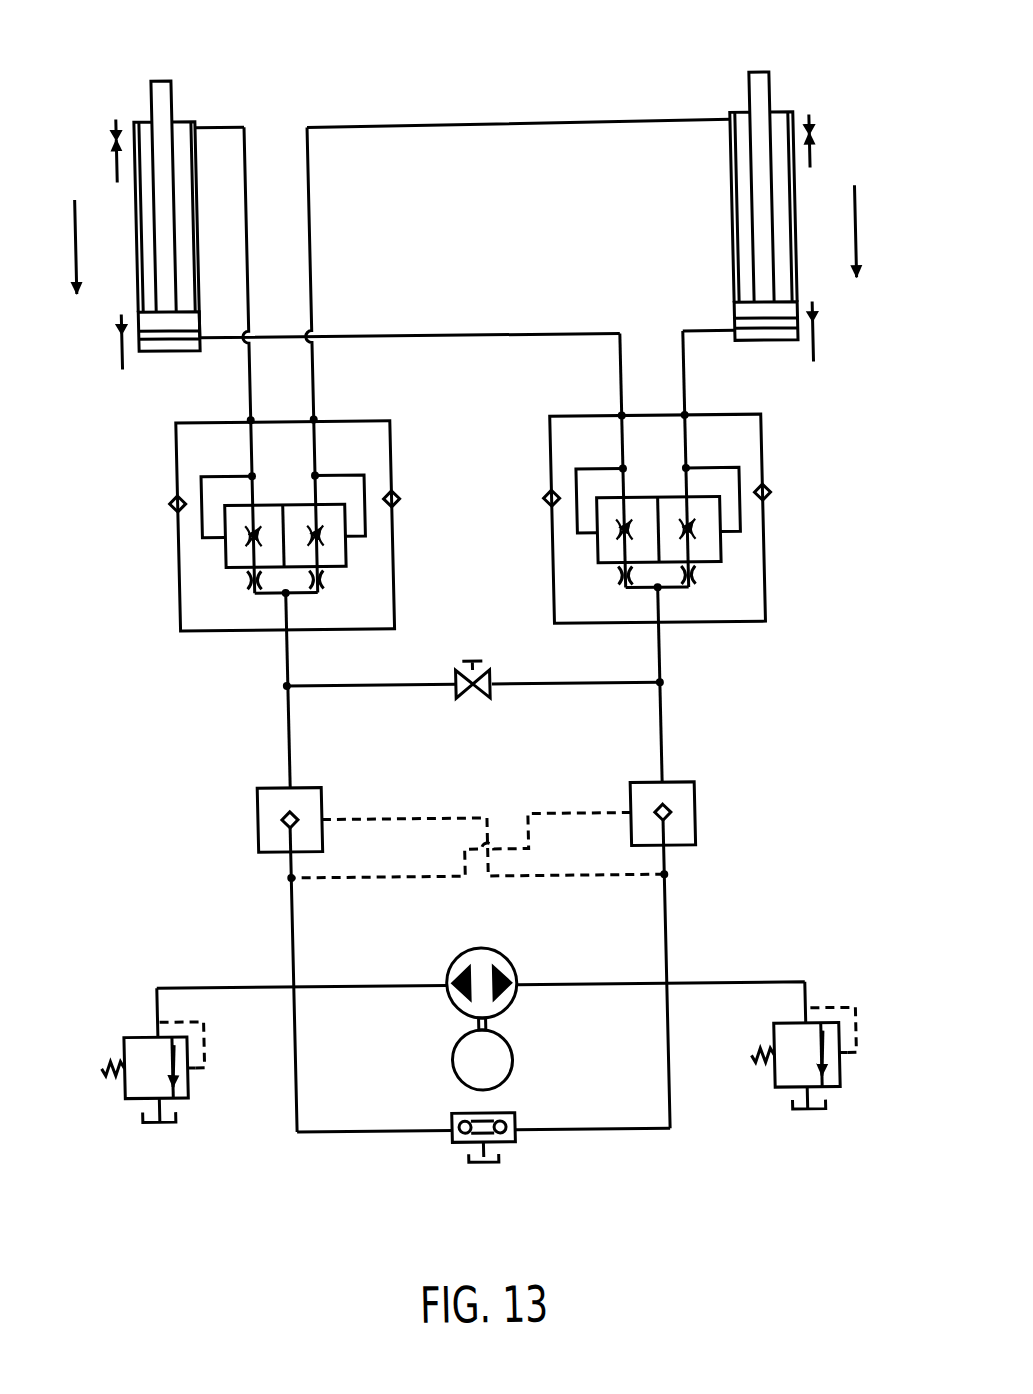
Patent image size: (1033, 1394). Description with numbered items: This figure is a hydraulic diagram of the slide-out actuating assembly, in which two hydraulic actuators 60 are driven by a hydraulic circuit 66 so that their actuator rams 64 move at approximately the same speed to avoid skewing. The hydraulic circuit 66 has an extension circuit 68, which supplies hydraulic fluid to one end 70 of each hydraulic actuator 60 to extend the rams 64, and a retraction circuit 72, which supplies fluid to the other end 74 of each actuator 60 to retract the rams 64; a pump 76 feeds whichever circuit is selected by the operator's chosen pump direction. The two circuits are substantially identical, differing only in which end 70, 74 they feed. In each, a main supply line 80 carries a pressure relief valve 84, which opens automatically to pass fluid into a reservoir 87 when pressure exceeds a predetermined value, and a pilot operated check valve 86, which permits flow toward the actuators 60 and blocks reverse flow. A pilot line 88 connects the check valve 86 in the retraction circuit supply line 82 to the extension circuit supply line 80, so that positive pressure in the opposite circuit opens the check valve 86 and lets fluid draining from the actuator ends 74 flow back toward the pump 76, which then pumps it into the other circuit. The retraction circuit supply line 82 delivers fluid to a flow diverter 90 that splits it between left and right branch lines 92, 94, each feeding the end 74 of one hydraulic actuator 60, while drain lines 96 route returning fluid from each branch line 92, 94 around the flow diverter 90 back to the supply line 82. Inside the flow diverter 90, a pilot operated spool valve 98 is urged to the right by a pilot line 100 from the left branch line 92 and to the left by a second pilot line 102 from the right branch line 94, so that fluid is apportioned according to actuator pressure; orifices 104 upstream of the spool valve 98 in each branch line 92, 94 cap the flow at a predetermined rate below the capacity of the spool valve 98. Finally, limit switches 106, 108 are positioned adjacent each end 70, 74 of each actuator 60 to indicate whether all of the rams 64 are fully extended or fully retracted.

The hydraulic actuator 60 is at (465, 210).
The actuator ram 64 is at (179, 78).
The hydraulic circuit 66 is at (489, 58).
The extension circuit 68 is at (799, 445).
The end of hydraulic actuator 70 is at (176, 350).
The retraction circuit 72 is at (111, 474).
The other end of hydraulic actuator 74 is at (160, 119).
The pump 76 is at (502, 1008).
The main supply line 80 is at (660, 747).
The retraction circuit supply line 82 is at (287, 745).
The pressure relief valve 84 is at (181, 1080).
The pilot operated check valve 86 is at (254, 818).
The reservoir 87 is at (140, 1121).
The pilot line 88 is at (375, 877).
The flow diverter 90 is at (360, 559).
The left branch line 92 is at (257, 385).
The right branch line 94 is at (320, 393).
The drain line 96 is at (182, 446).
The pilot operated spool valve 98 is at (226, 556).
The pilot line 100 is at (251, 472).
The second pilot line 102 is at (336, 471).
The orifice 104 is at (255, 592).
The limit switch 106 is at (130, 351).
The limit switch 108 is at (127, 161).